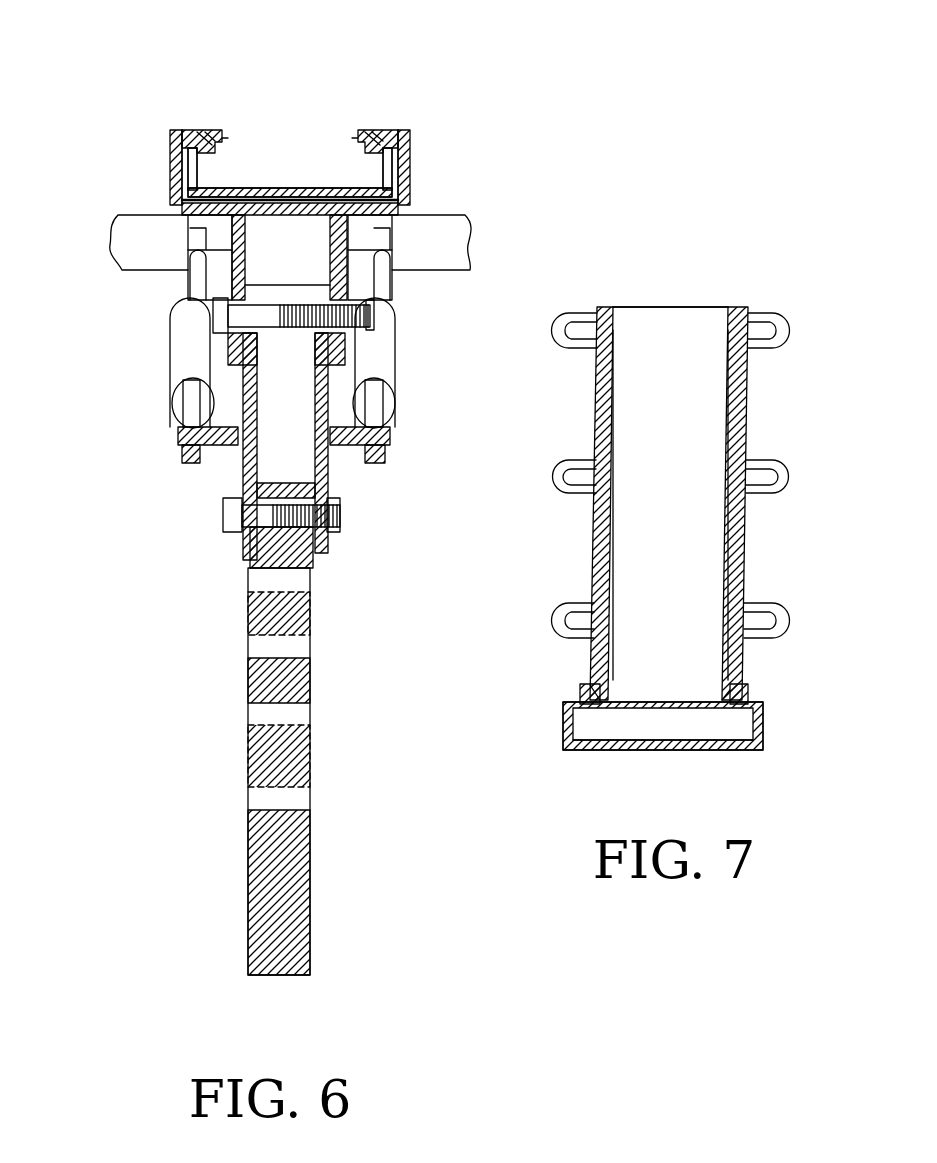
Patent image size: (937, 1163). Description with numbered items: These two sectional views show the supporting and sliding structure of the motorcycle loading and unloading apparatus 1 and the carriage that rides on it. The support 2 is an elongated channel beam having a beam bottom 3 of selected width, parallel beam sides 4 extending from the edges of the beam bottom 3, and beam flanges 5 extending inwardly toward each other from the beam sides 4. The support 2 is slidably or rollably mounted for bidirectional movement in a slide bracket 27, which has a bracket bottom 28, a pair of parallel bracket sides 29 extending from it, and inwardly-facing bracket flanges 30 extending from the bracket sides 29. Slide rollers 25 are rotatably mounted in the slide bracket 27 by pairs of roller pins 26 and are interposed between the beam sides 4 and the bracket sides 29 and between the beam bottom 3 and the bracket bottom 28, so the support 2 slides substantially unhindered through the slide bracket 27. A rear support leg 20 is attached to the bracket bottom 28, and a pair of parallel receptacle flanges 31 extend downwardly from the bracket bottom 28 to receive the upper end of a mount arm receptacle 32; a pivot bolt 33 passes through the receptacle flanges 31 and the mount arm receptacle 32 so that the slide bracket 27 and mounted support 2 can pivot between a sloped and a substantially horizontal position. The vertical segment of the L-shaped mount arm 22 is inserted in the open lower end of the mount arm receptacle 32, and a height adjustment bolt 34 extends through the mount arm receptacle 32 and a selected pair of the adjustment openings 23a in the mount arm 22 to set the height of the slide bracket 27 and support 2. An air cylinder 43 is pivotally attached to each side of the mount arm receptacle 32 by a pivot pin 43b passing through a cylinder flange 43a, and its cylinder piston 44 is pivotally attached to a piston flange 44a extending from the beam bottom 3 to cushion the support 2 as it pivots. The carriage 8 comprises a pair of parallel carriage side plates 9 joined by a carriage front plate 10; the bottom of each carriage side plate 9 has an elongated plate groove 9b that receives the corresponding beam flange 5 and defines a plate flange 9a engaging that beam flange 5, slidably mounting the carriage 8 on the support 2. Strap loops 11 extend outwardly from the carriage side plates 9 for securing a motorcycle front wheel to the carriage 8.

In FIG. 6, the apparatus 1 is at (130, 55).
In FIG. 6, the support 2 is at (352, 128).
In FIG. 7, the support 2 is at (560, 722).
In FIG. 6, the beam bottom 3 is at (302, 190).
In FIG. 7, the beam bottom 3 is at (705, 748).
In FIG. 6, the beam sides 4 is at (198, 176).
In FIG. 7, the beam sides 4 is at (565, 708).
In FIG. 6, the beam flanges 5 is at (355, 150).
In FIG. 7, the beam flanges 5 is at (580, 688).
In FIG. 7, the carriage 8 is at (737, 303).
In FIG. 7, the carriage side plates 9 is at (728, 375).
In FIG. 7, the plate flange 9a is at (735, 700).
In FIG. 7, the plate groove 9b is at (590, 690).
In FIG. 7, the carriage front plate 10 is at (660, 325).
In FIG. 7, the strap loops 11 is at (583, 457).
In FIG. 6, the rear support leg 20 is at (455, 232).
In FIG. 6, the mount arm 22 is at (246, 607).
In FIG. 6, the adjustment openings 23a is at (310, 578).
In FIG. 6, the slide rollers 25 is at (186, 202).
In FIG. 6, the roller pins 26 is at (192, 130).
In FIG. 6, the slide bracket 27 is at (165, 148).
In FIG. 6, the bracket bottom 28 is at (318, 242).
In FIG. 6, the bracket sides 29 is at (178, 170).
In FIG. 6, the bracket flanges 30 is at (208, 130).
In FIG. 6, the receptacle flanges 31 is at (313, 393).
In FIG. 6, the mount arm receptacle 32 is at (243, 470).
In FIG. 6, the pivot bolt 33 is at (218, 312).
In FIG. 6, the height adjustment bolt 34 is at (223, 513).
In FIG. 6, the air cylinder 43 is at (182, 352).
In FIG. 6, the cylinder flange 43a is at (185, 455).
In FIG. 6, the pivot pin 43b is at (183, 437).
In FIG. 6, the cylinder piston 44 is at (198, 276).
In FIG. 6, the piston flange 44a is at (215, 236).